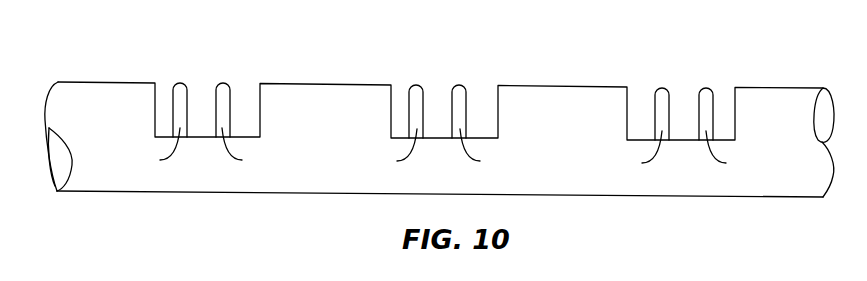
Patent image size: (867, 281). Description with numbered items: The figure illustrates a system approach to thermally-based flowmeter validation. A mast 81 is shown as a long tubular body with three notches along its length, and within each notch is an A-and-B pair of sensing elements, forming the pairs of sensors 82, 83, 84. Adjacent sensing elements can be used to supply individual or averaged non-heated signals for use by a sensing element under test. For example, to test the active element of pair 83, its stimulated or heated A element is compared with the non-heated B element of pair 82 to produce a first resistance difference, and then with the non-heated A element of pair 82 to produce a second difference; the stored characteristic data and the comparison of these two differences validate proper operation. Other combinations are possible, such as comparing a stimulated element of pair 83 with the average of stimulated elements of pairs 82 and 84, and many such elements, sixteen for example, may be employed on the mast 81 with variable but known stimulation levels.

The mast 81 is at (116, 82).
The pair of sensors 82 is at (200, 77).
The pair of sensors 83 is at (437, 78).
The pair of sensors 84 is at (678, 82).